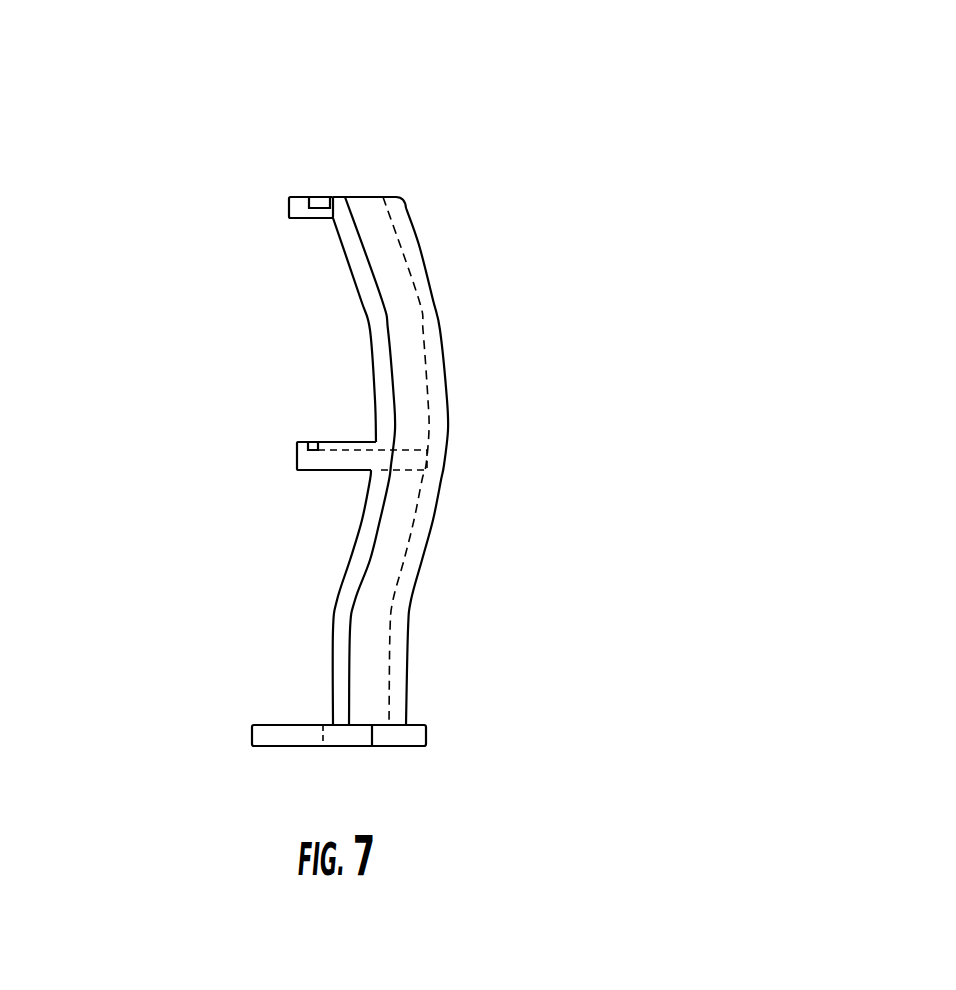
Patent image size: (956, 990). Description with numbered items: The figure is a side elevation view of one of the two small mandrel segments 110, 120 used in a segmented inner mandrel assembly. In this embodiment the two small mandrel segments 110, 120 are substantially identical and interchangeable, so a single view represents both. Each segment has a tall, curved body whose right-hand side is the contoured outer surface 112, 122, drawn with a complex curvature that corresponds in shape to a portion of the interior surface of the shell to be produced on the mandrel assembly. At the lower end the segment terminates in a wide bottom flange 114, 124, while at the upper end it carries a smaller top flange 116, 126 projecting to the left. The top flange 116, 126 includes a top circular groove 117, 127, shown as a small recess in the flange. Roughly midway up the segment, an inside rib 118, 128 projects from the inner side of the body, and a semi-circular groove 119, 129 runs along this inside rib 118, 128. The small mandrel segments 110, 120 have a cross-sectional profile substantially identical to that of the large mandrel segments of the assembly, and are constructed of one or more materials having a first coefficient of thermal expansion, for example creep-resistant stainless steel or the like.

The small mandrel segment 110 is at (407, 394).
The small mandrel segment 120 is at (546, 100).
The contoured outer surface 112 is at (447, 461).
The contoured outer surface 122 is at (410, 388).
The bottom flange 114 is at (269, 719).
The bottom flange 124 is at (271, 735).
The top flange 116 is at (242, 194).
The top flange 126 is at (289, 205).
The top circular groove 117 is at (266, 168).
The top circular groove 127 is at (318, 205).
The inside rib 118 is at (269, 454).
The inside rib 128 is at (297, 457).
The semi-circular groove 119 is at (235, 412).
The semi-circular groove 129 is at (312, 445).